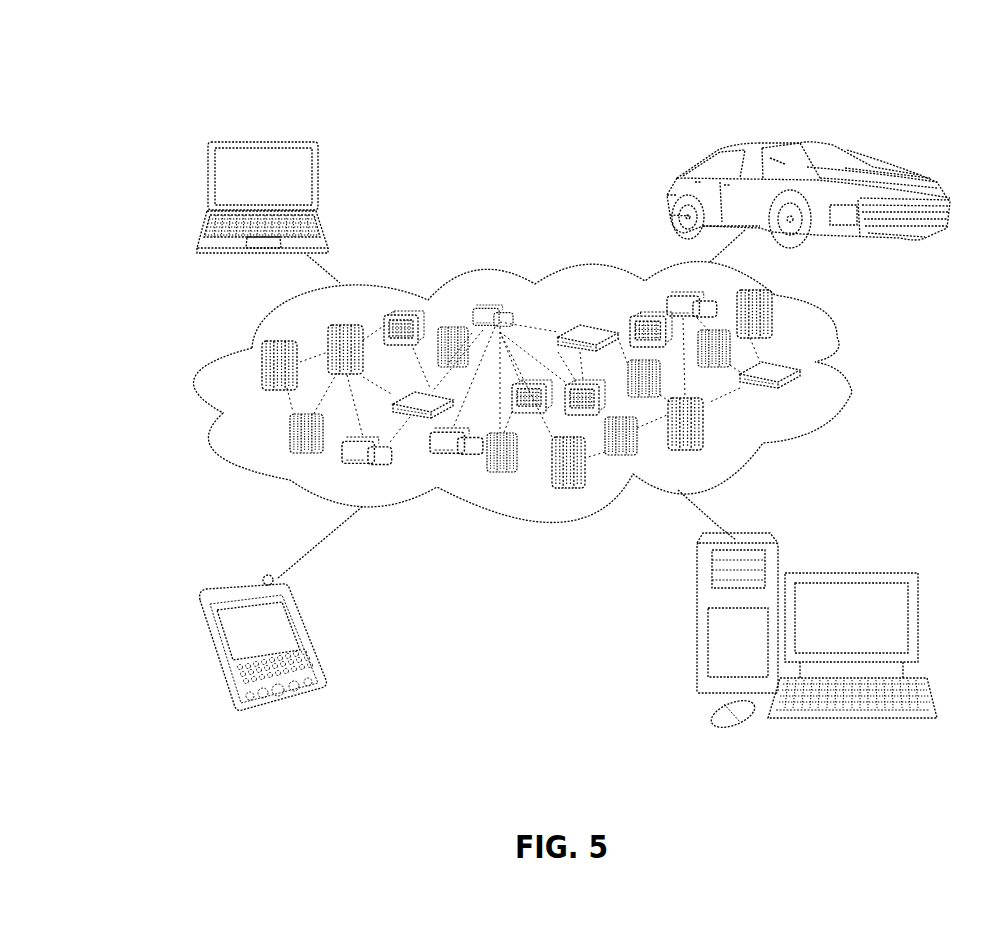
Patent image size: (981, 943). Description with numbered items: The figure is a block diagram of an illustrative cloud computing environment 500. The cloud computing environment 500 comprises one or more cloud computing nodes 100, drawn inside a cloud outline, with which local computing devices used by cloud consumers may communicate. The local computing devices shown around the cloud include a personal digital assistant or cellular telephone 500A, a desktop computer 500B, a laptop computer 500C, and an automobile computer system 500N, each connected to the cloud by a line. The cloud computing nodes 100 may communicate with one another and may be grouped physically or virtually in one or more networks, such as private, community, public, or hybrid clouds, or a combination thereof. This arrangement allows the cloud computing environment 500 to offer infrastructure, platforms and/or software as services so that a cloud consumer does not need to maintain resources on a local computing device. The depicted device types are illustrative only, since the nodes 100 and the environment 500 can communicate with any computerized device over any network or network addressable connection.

The cloud computing environment 500 is at (144, 55).
The cloud computing node 100 is at (801, 395).
The personal digital assistant or cellular telephone 500A is at (315, 640).
The desktop computer 500B is at (850, 572).
The laptop computer 500C is at (322, 182).
The automobile computer system 500N is at (668, 193).